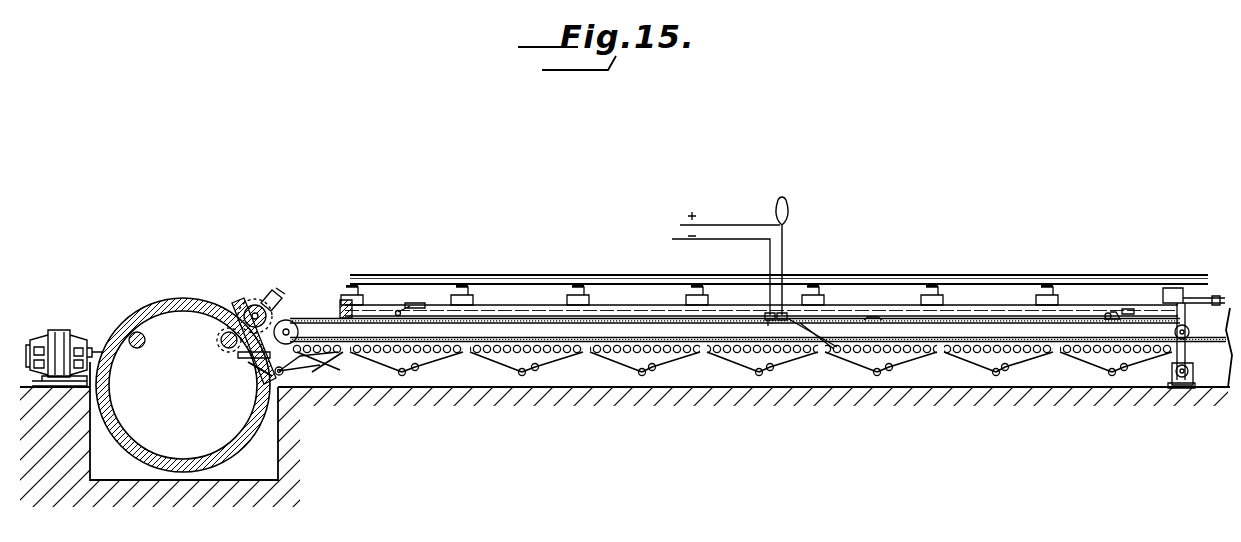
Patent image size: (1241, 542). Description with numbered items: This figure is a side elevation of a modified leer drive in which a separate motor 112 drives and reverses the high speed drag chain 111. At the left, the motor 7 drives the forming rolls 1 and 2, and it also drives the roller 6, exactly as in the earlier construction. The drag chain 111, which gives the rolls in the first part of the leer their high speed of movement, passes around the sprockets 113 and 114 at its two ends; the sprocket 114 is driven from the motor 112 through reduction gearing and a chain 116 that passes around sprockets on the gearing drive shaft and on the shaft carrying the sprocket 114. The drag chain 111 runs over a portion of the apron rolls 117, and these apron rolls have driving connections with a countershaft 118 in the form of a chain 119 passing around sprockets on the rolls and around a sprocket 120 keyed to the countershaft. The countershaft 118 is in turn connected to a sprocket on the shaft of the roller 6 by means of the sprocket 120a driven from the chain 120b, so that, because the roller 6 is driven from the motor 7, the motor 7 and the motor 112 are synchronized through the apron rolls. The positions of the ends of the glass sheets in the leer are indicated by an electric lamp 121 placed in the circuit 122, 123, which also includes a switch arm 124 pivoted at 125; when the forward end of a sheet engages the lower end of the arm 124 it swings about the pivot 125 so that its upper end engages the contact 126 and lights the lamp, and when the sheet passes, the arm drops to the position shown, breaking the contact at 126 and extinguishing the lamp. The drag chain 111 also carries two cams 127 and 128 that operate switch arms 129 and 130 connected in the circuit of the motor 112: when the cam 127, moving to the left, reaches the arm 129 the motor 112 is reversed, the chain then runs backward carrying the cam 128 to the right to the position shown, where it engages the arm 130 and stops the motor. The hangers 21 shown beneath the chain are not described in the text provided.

The forming roll 1 is at (155, 298).
The forming roll 2 is at (246, 303).
The roller 6 is at (222, 336).
The motor 7 is at (58, 347).
The hanger with pulleys 21 is at (436, 360).
The drag chain 111 is at (550, 315).
The motor 112 is at (1160, 388).
The sprocket 113 is at (298, 320).
The sprocket 114 is at (1178, 328).
The chain 116 is at (1192, 335).
The apron rolls 117 is at (343, 355).
The countershaft 118 is at (279, 376).
The chain 119 is at (305, 372).
The sprocket 120 is at (258, 378).
The sprocket 120a is at (246, 357).
The chain 120b is at (247, 363).
The electric lamp 121 is at (783, 204).
The circuit 122 is at (731, 252).
The circuit 123 is at (725, 225).
The switch arm 124 is at (800, 325).
The pivot 125 is at (808, 332).
The contact 126 is at (768, 326).
The cam 127 is at (868, 318).
The cam 128 is at (1104, 316).
The switch arm 129 is at (407, 302).
The switch arm 130 is at (1120, 310).